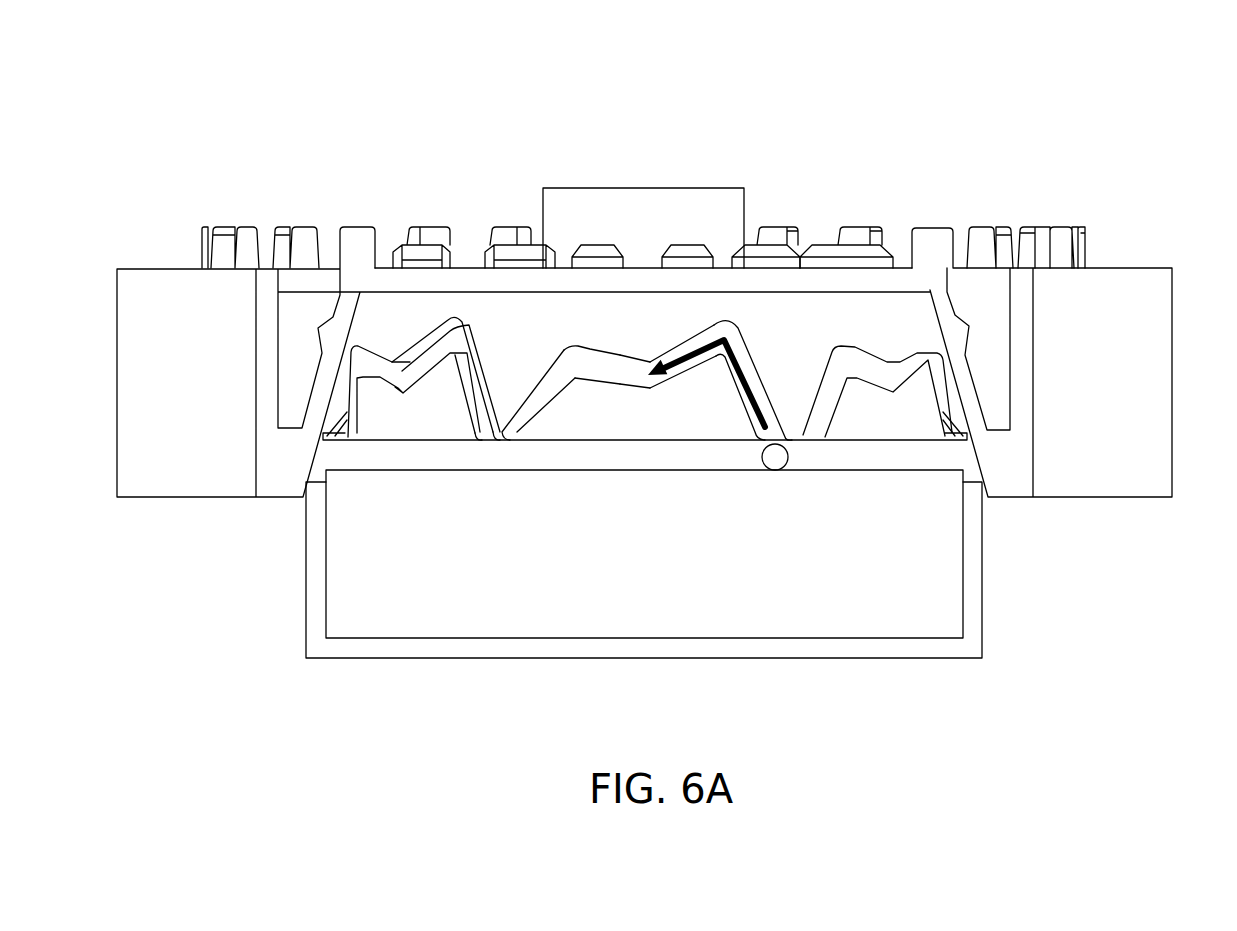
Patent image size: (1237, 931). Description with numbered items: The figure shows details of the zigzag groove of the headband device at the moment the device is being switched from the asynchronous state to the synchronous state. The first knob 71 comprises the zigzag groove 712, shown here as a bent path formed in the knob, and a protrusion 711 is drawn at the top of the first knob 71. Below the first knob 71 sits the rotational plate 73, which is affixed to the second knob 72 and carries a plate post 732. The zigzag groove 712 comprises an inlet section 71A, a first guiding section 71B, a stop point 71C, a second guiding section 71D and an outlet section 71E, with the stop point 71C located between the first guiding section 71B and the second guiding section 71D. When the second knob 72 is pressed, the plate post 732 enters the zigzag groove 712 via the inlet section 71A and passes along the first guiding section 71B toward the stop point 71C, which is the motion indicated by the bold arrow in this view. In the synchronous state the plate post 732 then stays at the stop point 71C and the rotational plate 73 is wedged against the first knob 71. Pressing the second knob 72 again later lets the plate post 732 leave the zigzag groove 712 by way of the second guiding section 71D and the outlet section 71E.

The first knob 71 is at (1153, 385).
The protrusion of housing 711 is at (1043, 243).
The zigzag groove 712 is at (435, 65).
The inlet section 71A is at (758, 368).
The first guiding section 71B is at (690, 343).
The stop point 71C is at (648, 378).
The second guiding section 71D is at (605, 367).
The outlet section 71E is at (543, 403).
The second knob 72 is at (412, 647).
The rotational plate 73 is at (897, 622).
The plate post 732 is at (775, 457).